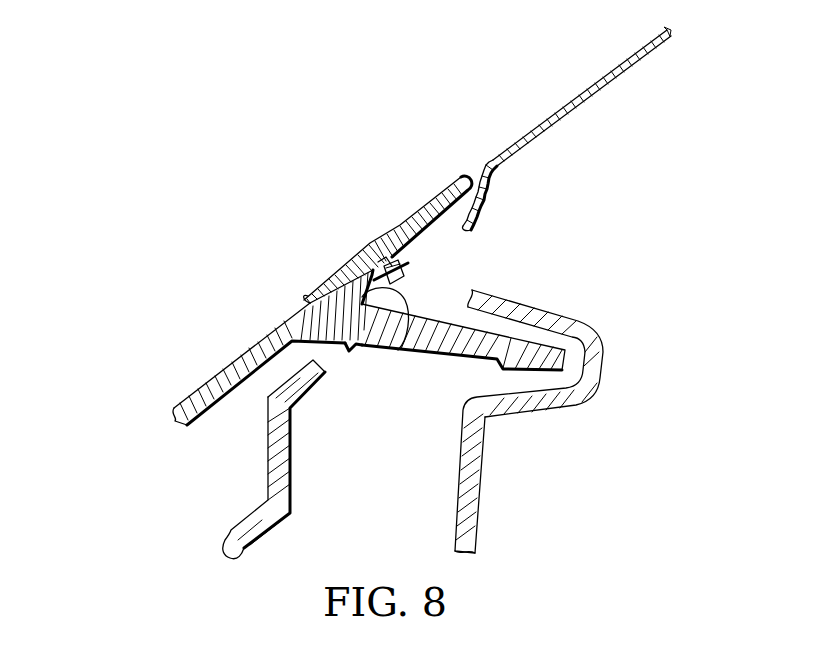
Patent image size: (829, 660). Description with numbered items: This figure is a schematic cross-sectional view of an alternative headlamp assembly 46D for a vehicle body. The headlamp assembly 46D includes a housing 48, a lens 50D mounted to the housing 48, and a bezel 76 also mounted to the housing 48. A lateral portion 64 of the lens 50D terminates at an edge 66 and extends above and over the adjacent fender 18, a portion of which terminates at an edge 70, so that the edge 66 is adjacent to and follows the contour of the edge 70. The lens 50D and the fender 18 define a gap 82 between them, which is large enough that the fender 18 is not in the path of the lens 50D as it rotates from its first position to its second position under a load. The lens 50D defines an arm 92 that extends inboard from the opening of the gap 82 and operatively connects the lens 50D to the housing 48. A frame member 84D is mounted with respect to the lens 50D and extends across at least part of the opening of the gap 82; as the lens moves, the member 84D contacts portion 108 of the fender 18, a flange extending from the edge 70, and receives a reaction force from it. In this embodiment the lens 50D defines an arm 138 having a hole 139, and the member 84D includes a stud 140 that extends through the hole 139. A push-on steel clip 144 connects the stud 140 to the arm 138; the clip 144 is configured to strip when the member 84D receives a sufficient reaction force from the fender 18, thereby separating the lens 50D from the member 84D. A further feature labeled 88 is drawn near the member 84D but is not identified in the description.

The fender 18 is at (540, 118).
The edge 70 is at (481, 174).
The member 84D is at (432, 203).
The hole 139 is at (375, 268).
The rounded end of seal strip 88 is at (345, 264).
The edge 66 is at (310, 293).
The lateral portion 64 is at (252, 340).
The headlamp assembly 46D is at (178, 300).
The lens 50D is at (210, 378).
The portion 108 is at (487, 214).
The push-on steel clip 144 is at (404, 272).
The gap 82 is at (478, 278).
The housing 48 is at (603, 351).
The stud 140 is at (387, 350).
The arm 138 is at (353, 348).
The arm 92 is at (438, 356).
The bezel 76 is at (293, 453).